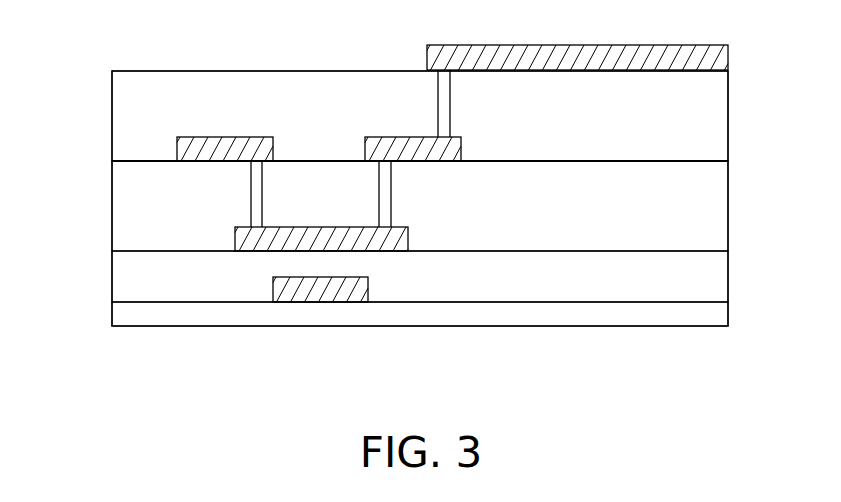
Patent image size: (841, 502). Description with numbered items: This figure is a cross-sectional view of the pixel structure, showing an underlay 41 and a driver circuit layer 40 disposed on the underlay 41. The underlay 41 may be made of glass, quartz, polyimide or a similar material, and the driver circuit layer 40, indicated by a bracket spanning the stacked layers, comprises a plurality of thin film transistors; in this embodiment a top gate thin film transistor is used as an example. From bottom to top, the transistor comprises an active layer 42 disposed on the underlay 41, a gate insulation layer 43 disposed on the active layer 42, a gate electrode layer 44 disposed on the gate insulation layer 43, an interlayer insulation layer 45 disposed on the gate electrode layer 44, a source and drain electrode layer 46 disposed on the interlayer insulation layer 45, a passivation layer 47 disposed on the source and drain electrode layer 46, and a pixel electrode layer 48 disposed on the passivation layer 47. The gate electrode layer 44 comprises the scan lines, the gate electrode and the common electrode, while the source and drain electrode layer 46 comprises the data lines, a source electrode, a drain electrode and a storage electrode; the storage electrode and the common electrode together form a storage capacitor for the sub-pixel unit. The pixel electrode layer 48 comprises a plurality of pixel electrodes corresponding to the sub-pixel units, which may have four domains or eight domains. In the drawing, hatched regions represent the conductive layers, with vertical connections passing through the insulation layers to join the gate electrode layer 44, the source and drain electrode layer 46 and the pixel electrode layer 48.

The driver circuit layer 40 is at (98, 88).
The underlay 41 is at (703, 320).
The active layer 42 is at (323, 288).
The gate insulation layer 43 is at (703, 283).
The gate electrode layer 44 is at (377, 245).
The interlayer insulation layer 45 is at (703, 206).
The source and drain electrode layer 46 is at (242, 145).
The passivation layer 47 is at (703, 121).
The pixel electrode layer 48 is at (703, 65).